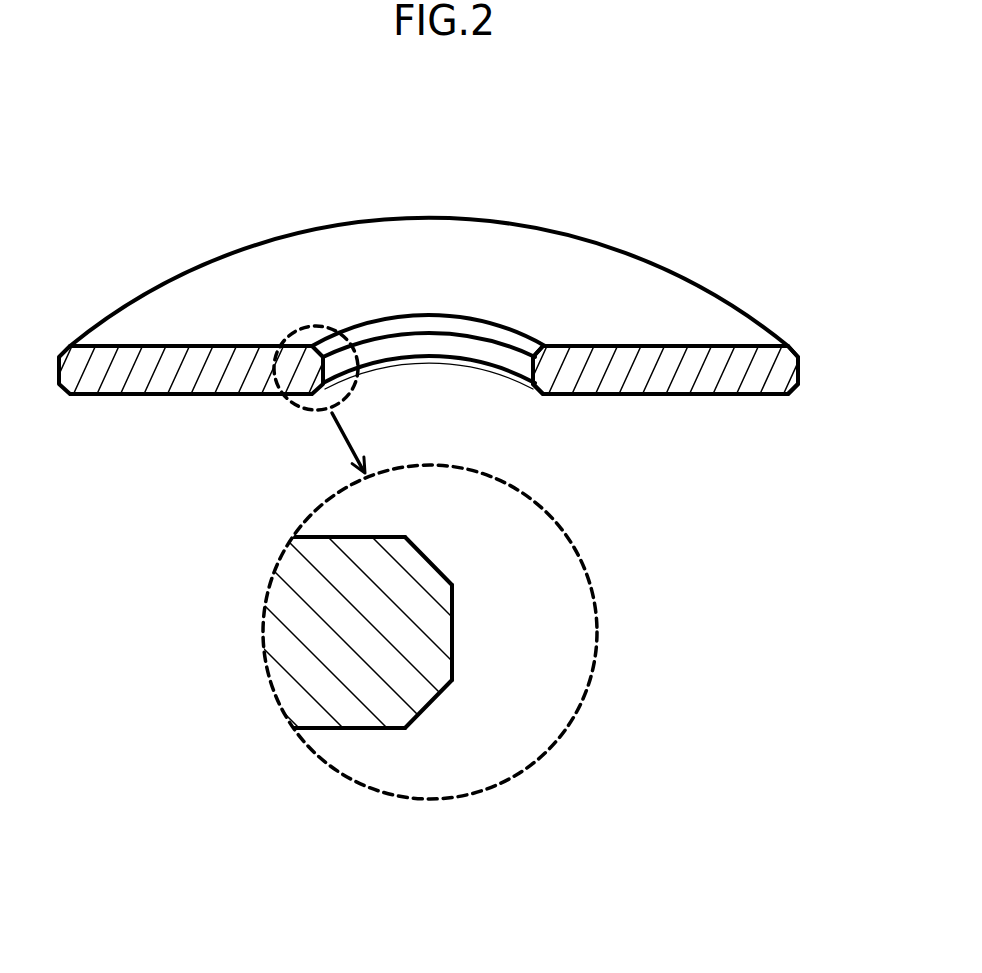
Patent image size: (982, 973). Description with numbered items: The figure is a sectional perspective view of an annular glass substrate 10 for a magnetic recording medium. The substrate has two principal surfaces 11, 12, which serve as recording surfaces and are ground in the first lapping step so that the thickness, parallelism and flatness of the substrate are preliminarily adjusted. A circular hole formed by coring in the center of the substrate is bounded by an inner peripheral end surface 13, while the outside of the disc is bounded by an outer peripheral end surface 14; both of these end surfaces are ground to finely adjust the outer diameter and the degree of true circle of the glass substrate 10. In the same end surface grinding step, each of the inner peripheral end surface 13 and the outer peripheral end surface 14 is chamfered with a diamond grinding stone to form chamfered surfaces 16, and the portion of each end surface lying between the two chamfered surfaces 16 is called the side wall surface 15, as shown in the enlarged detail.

The annular glass substrate 10 is at (438, 323).
The principal surface 11 is at (429, 257).
The principal surface 12 is at (665, 425).
The inner peripheral end surface 13 is at (559, 425).
The outer peripheral end surface 14 is at (806, 425).
The side wall surface 15 is at (492, 632).
The chamfered surface 16 is at (456, 632).